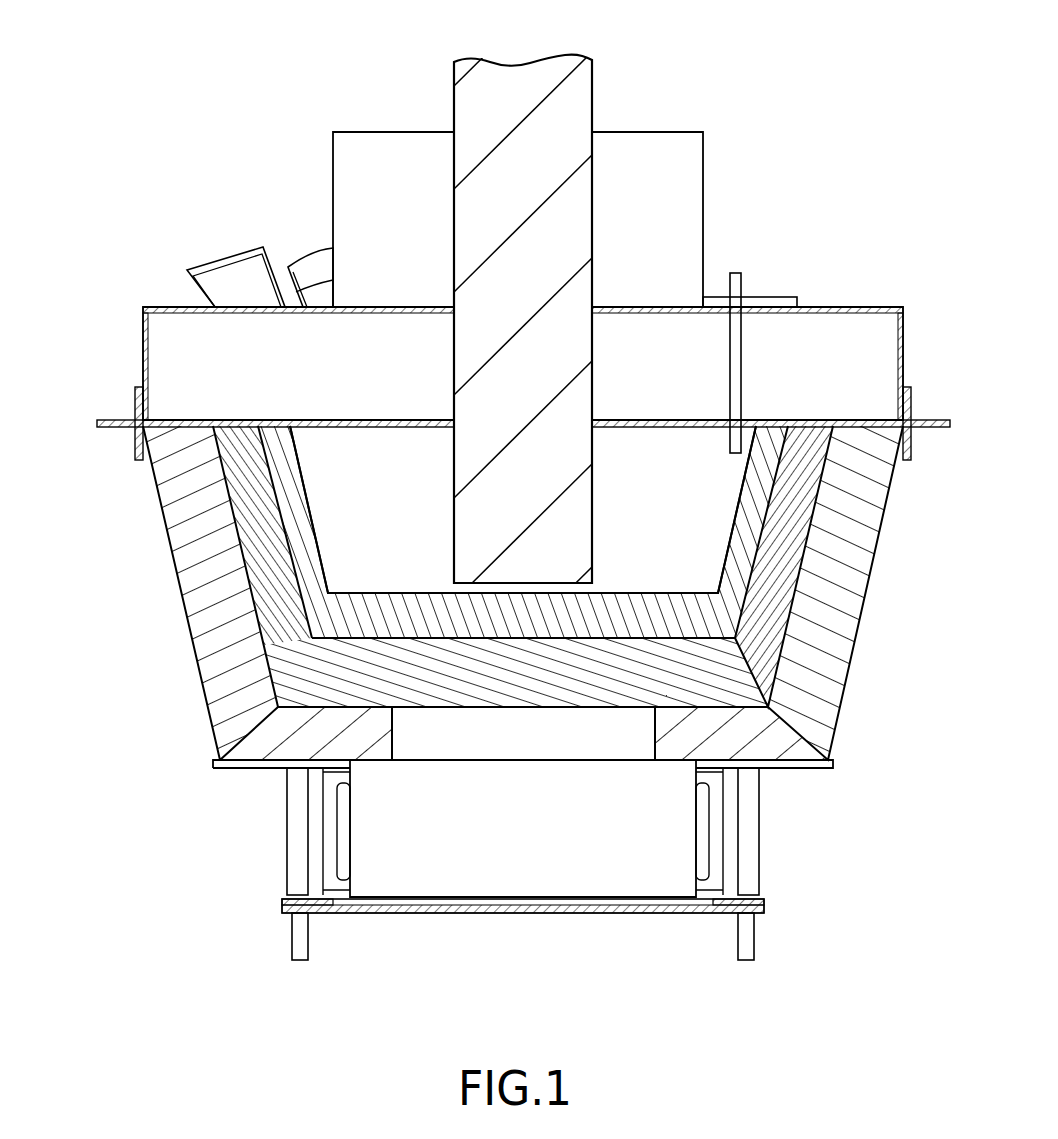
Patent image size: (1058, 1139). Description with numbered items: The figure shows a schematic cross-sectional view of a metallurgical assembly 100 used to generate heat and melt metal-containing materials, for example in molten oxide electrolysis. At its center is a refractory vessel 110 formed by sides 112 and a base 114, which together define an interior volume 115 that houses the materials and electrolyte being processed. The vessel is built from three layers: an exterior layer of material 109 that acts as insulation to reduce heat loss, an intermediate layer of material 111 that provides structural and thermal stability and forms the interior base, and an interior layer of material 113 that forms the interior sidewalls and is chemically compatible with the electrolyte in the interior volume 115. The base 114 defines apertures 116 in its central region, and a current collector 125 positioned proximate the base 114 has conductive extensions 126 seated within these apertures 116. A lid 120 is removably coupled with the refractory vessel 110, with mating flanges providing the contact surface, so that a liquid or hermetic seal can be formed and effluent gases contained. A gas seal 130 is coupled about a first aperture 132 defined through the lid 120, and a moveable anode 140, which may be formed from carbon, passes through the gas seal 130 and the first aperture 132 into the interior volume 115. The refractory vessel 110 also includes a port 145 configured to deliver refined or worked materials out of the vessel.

The metallurgical assembly 100 is at (185, 71).
The exterior layer of material 109 is at (870, 568).
The refractory vessel 110 is at (182, 597).
The intermediate layer of material 111 is at (808, 543).
The sides 112 is at (163, 523).
The interior layer of material 113 is at (772, 498).
The base 114 is at (218, 766).
The interior volume 115 is at (322, 463).
The apertures 116 is at (400, 720).
The lid 120 is at (144, 347).
The current collector 125 is at (388, 806).
The conductive extensions 126 is at (398, 680).
The gas seal 130 is at (350, 132).
The first aperture 132 is at (455, 345).
The moveable anode 140 is at (528, 60).
The port 145 is at (853, 638).